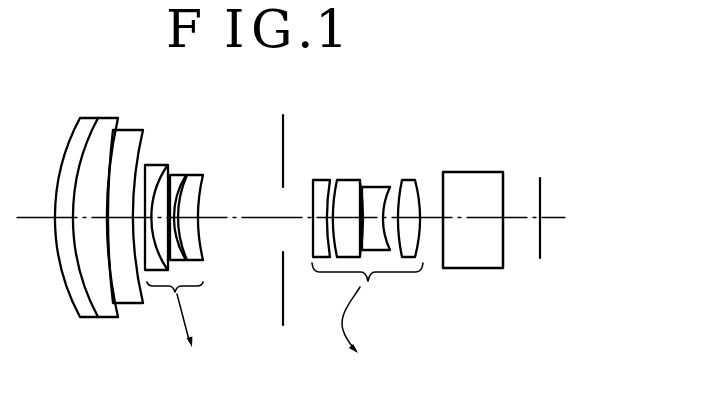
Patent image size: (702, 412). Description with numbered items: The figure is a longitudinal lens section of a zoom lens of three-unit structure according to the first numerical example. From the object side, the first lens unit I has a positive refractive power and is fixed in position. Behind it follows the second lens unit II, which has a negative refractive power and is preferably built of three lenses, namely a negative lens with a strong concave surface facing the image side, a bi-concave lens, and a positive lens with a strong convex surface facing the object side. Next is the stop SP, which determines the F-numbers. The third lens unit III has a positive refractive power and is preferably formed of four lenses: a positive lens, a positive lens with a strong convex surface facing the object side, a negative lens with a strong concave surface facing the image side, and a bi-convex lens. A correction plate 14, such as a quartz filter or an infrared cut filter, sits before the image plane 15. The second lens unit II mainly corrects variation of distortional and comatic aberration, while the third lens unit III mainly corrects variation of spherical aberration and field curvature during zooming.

The first lens unit I is at (157, 109).
The second lens unit II is at (212, 131).
The third lens unit III is at (418, 124).
The stop SP is at (283, 304).
The correction plate 14 is at (478, 163).
The image plane 15 is at (542, 167).